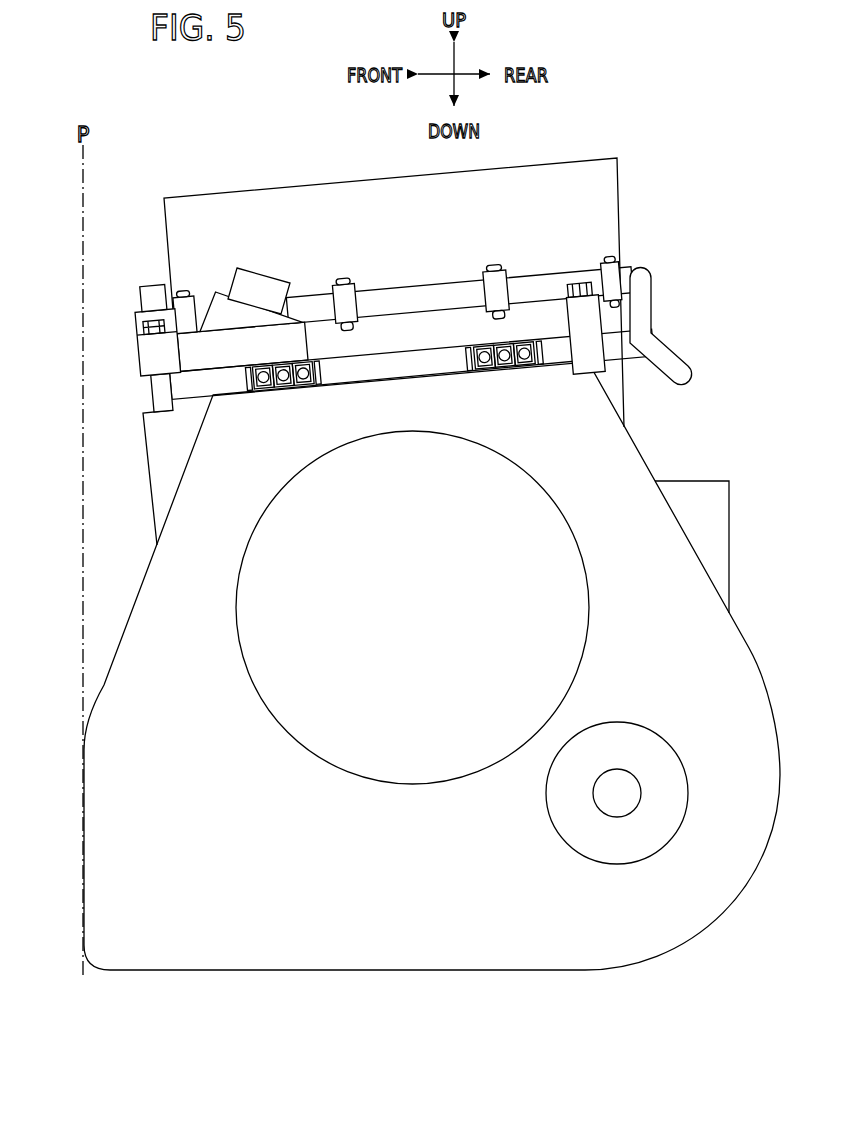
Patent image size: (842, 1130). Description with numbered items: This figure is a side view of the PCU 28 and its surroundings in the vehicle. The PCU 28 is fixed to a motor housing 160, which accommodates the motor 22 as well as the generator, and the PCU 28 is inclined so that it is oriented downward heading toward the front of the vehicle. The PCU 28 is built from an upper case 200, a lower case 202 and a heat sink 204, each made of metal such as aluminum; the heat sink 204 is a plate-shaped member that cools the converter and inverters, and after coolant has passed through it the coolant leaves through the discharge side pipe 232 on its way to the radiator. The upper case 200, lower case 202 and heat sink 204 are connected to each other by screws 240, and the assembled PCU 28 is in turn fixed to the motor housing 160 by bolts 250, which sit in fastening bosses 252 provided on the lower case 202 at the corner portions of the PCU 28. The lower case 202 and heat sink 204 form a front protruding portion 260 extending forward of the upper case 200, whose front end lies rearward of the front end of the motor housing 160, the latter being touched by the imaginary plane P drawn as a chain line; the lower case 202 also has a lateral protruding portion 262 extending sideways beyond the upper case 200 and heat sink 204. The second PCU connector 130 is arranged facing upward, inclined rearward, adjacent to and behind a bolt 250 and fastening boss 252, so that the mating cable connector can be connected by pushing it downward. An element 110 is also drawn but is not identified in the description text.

The motor 22 is at (571, 633).
The PCU 28 is at (619, 157).
The cable 110 is at (153, 287).
The second PCU connector 130 is at (263, 285).
The motor housing 160 is at (665, 548).
The upper case 200 is at (378, 276).
The lower case 202 is at (641, 372).
The heat sink 204 is at (412, 283).
The discharge side pipe 232 is at (667, 362).
The screws 240 is at (182, 292).
The bolts 250 is at (143, 323).
The fastening bosses 252 is at (582, 325).
The front protruding portion 260 is at (136, 338).
The lateral protruding portion 262 is at (226, 374).